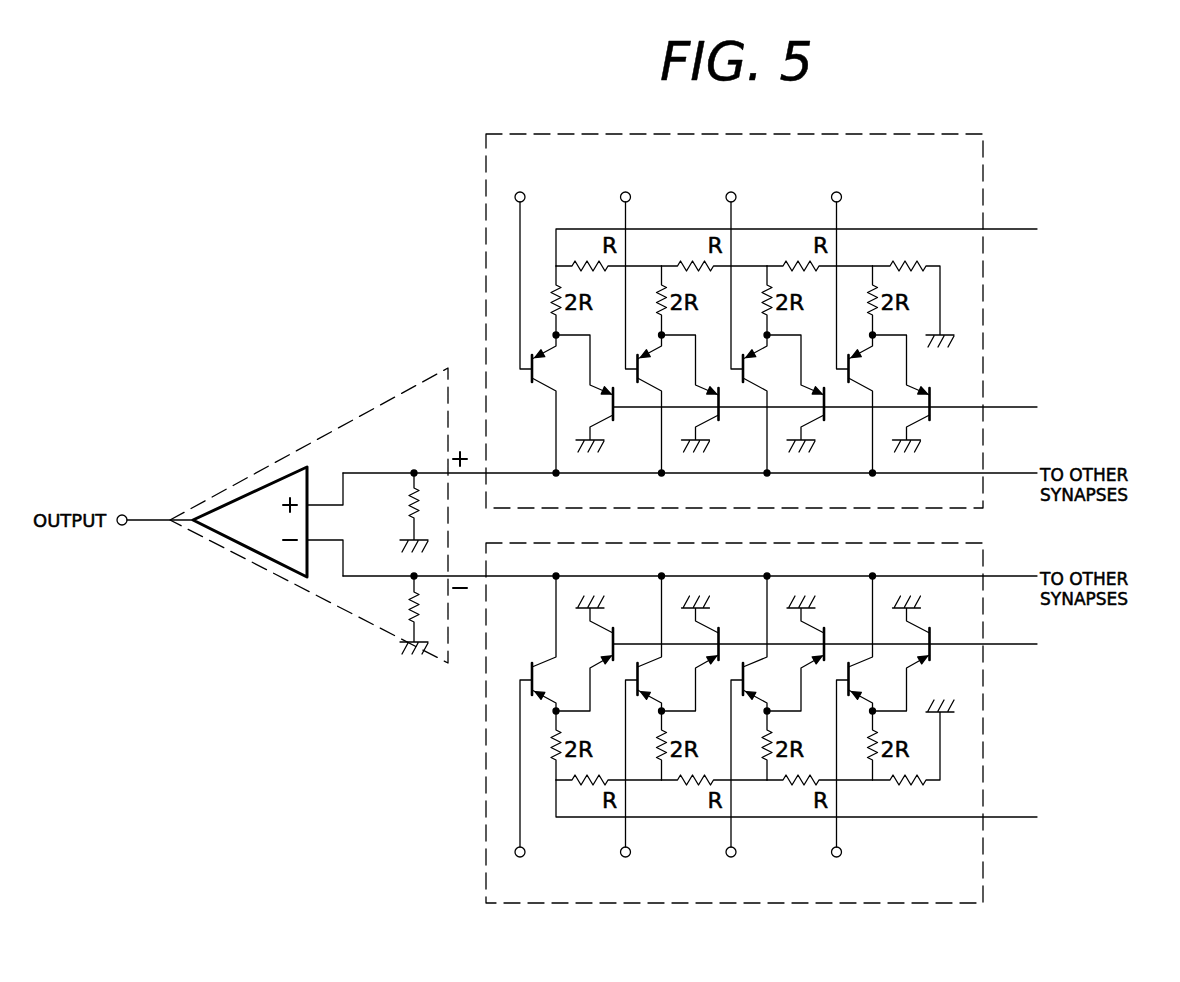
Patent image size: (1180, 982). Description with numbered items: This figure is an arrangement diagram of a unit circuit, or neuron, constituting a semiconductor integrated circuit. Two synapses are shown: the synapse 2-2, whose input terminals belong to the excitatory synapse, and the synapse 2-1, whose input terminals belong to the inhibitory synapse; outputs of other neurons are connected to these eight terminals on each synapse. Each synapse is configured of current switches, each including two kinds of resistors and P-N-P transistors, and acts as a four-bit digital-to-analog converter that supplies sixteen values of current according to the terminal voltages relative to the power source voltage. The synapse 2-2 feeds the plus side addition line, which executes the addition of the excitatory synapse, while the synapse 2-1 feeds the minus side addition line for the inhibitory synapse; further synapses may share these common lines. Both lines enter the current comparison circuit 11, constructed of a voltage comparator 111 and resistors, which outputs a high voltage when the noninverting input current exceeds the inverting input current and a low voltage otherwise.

The current comparison circuit 11 is at (392, 402).
The voltage comparator 111 is at (252, 490).
The synapse 2-2 is at (983, 321).
The synapse 2-1 is at (983, 879).